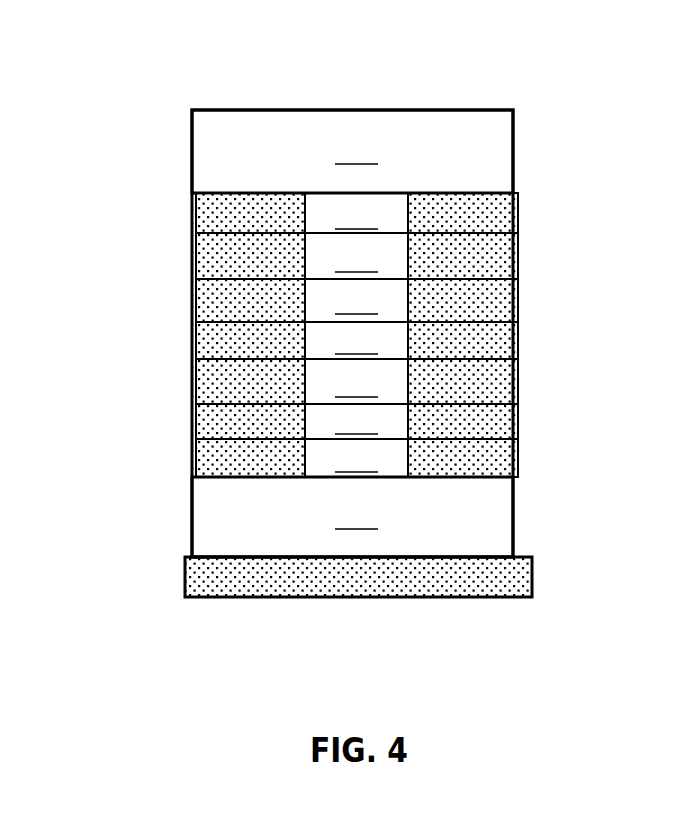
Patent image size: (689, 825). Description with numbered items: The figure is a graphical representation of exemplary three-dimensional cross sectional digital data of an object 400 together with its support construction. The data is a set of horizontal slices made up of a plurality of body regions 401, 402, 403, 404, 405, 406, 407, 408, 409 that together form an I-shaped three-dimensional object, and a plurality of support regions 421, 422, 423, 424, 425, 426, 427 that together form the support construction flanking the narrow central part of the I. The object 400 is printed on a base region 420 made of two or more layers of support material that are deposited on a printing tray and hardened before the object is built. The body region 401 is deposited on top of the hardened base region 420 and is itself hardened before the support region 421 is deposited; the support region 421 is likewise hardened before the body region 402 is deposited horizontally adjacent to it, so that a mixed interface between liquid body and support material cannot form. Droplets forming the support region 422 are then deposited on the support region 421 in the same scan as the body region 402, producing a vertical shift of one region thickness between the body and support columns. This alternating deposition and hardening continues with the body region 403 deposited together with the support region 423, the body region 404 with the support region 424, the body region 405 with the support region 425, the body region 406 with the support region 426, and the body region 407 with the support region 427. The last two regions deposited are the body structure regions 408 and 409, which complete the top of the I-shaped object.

The object 400 is at (221, 88).
The body region 401 is at (352, 517).
The body region 402 is at (356, 458).
The body region 403 is at (356, 421).
The body region 404 is at (356, 381).
The body region 405 is at (356, 340).
The body region 406 is at (356, 300).
The body region 407 is at (356, 256).
The body structure region 408 is at (356, 213).
The body structure region 409 is at (352, 151).
The base region 420 is at (188, 580).
The support region 421 is at (195, 465).
The support region 422 is at (195, 421).
The support region 423 is at (195, 386).
The support region 424 is at (195, 350).
The support region 425 is at (195, 313).
The support region 426 is at (195, 267).
The support region 427 is at (195, 224).